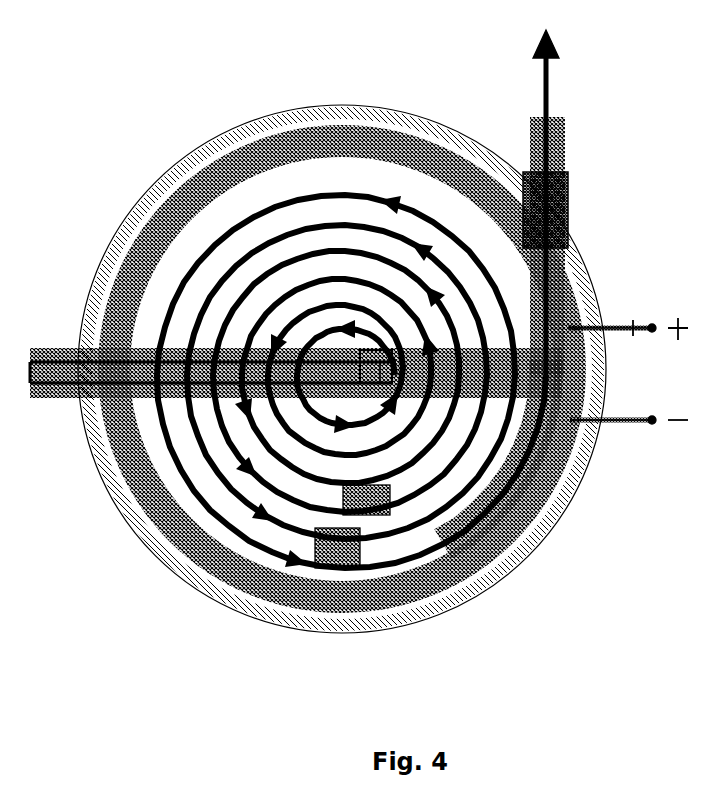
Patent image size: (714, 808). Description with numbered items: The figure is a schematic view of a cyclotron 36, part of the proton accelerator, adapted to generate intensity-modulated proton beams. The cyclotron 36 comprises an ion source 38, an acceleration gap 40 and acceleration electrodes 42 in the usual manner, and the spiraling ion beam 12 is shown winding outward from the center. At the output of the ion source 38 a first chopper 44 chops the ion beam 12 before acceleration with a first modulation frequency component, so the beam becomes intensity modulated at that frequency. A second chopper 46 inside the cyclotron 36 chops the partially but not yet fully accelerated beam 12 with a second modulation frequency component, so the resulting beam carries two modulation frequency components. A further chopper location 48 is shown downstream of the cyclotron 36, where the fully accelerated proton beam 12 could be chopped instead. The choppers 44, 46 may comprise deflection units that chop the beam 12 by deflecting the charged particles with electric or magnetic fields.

The ion beam 12 is at (433, 550).
The cyclotron 36 is at (232, 126).
The ion source 38 is at (112, 385).
The acceleration gap 40 is at (528, 380).
The acceleration electrodes 42 is at (616, 326).
The first chopper 44 is at (386, 352).
The second chopper 46 is at (343, 555).
The further chopper location 48 is at (560, 206).